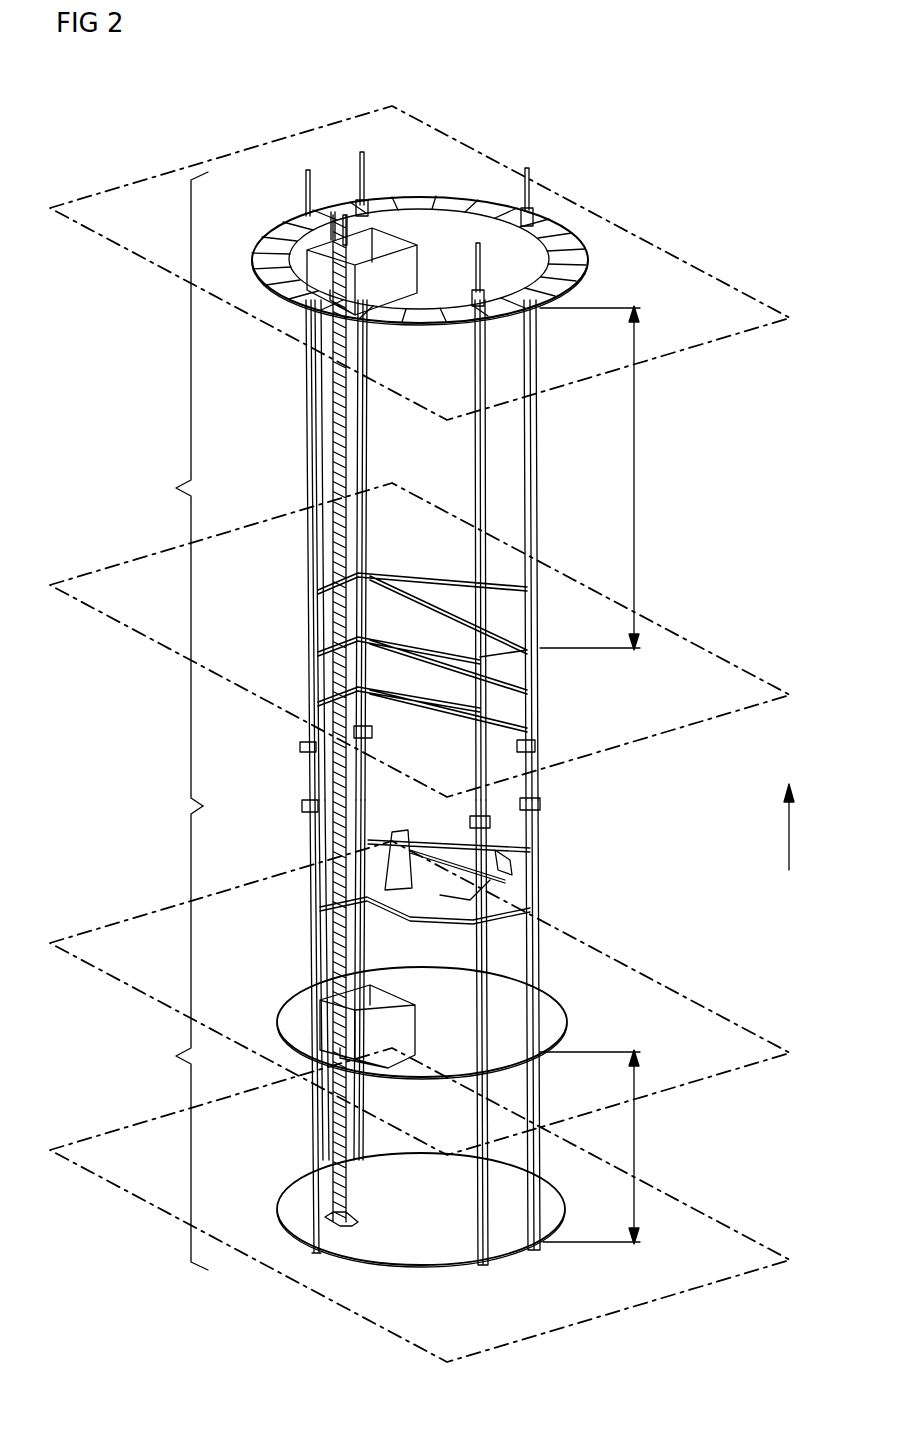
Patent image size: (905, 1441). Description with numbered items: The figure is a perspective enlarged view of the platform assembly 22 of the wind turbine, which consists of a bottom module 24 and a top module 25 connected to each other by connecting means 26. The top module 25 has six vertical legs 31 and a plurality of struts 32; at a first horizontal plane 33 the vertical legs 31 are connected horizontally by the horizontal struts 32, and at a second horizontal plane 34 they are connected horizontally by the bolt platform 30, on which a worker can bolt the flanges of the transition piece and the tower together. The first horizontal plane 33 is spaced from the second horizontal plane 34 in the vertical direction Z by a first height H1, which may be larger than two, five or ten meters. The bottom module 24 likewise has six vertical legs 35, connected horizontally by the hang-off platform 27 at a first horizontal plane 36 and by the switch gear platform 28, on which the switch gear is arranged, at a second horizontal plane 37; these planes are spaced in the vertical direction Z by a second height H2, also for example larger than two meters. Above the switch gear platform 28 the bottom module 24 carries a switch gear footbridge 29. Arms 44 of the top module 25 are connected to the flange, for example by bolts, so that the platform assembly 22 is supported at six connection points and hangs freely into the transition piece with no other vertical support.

The platform assembly 22 is at (604, 90).
The bottom module 24 is at (173, 1038).
The top module 25 is at (173, 489).
The connecting means 26 is at (300, 747).
The hang-off platform 27 is at (418, 1240).
The switch gear platform 28 is at (550, 1020).
The switch gear footbridge 29 is at (505, 893).
The bolt platform 30 is at (428, 228).
The vertical legs 31 is at (305, 381).
The struts 32 is at (432, 585).
The first horizontal plane 33 is at (737, 690).
The second horizontal plane 34 is at (737, 302).
The vertical legs 35 is at (345, 1100).
The first horizontal plane 36 is at (737, 1252).
The second horizontal plane 37 is at (737, 1040).
The arms 44 is at (364, 150).
The first height H1 is at (636, 508).
The second height H2 is at (636, 1135).
The vertical direction Z is at (790, 838).